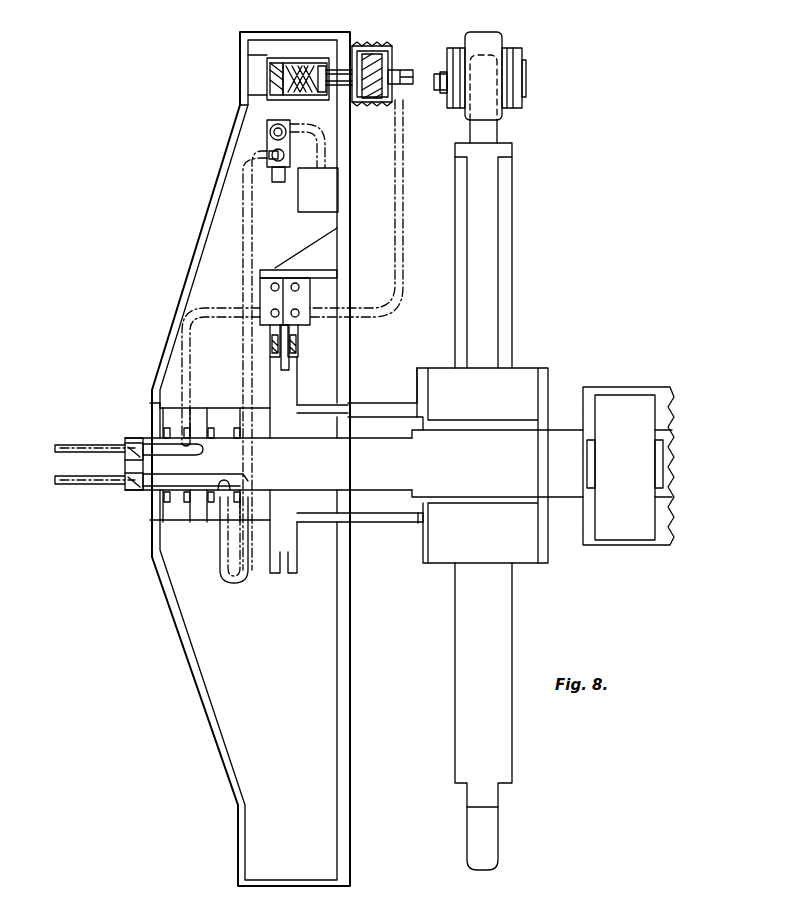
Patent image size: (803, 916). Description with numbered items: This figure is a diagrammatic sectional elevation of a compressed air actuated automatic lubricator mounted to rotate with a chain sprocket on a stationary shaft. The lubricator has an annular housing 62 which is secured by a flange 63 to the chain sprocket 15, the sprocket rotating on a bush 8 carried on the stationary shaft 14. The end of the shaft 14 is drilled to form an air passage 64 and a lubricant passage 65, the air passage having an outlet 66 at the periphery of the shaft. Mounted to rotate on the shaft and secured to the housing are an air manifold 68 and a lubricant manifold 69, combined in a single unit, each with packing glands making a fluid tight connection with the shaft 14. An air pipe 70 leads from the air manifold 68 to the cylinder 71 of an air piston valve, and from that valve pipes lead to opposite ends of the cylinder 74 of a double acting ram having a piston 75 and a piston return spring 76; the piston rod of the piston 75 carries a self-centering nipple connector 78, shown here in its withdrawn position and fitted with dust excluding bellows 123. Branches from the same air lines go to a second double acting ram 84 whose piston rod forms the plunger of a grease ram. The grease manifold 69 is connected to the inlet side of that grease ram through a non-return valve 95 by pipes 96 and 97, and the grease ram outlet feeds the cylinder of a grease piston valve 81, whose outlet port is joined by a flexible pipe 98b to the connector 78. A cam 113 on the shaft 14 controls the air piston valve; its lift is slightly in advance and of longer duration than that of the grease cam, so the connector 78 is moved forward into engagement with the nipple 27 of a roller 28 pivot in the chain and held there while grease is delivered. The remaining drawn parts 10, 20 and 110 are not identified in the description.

The bush 8 is at (485, 428).
The shaft 10 is at (268, 464).
The stationary shaft 14 is at (482, 465).
The chain sprocket 15 is at (455, 548).
The piston 20 is at (303, 100).
The nipple 27 is at (437, 90).
The roller 28 is at (492, 40).
The annular housing 62 is at (342, 634).
The flange 63 is at (418, 555).
The air passage 64 is at (133, 440).
The lubricant passage 65 is at (140, 487).
The outlet 66 is at (204, 450).
The air manifold 68 is at (177, 425).
The lubricant manifold 69 is at (216, 512).
The air pipe 70 is at (195, 311).
The cylinder of piston valve 71 is at (267, 278).
The cylinder 74 is at (263, 62).
The piston 75 is at (280, 70).
The piston return spring 76 is at (285, 96).
The self-centering nipple connector 78 is at (410, 73).
The piston valve 81 is at (305, 290).
The double acting ram 84 is at (318, 190).
The non-return valve 95 is at (267, 143).
The pipe 96 is at (245, 222).
The pipe 97 is at (325, 148).
The flexible pipe 98b is at (391, 320).
The column 110 is at (272, 362).
The cam 113 is at (290, 352).
The dust excluding bellows 123 is at (393, 44).